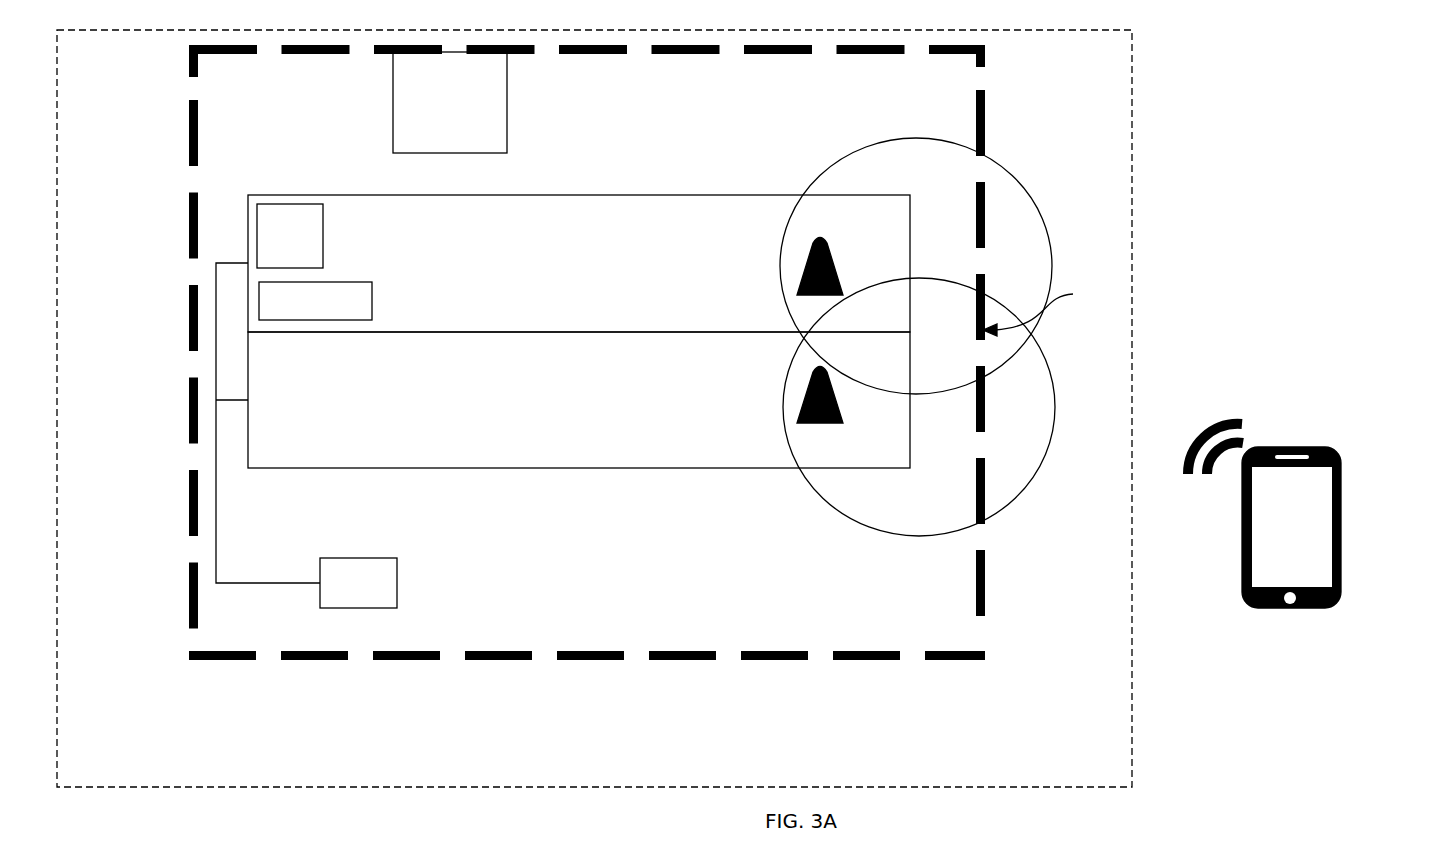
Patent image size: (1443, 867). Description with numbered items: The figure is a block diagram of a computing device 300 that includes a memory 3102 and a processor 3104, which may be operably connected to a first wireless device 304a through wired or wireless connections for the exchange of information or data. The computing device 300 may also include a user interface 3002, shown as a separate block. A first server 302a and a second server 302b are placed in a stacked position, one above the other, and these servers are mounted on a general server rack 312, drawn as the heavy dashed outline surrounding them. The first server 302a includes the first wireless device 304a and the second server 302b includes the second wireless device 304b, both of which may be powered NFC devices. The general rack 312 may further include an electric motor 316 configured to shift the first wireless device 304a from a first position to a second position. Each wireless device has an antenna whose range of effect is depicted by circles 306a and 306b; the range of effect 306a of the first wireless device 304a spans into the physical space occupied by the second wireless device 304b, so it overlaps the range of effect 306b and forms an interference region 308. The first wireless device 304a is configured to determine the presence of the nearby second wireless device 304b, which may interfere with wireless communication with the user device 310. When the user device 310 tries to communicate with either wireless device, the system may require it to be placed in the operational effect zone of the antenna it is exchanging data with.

The computing device 300 is at (398, 30).
The general server rack 312 is at (185, 137).
The user interface 3002 is at (392, 122).
The first server 302a is at (647, 195).
The second server 302b is at (418, 470).
The memory 3102 is at (257, 237).
The processor 3104 is at (259, 305).
The electric motor 316 is at (352, 552).
The first wireless device 304a is at (796, 273).
The second wireless device 304b is at (798, 400).
The range of effect 306a is at (1010, 173).
The range of effect 306b is at (1015, 498).
The interference region 308 is at (1047, 311).
The user device 310 is at (1333, 450).